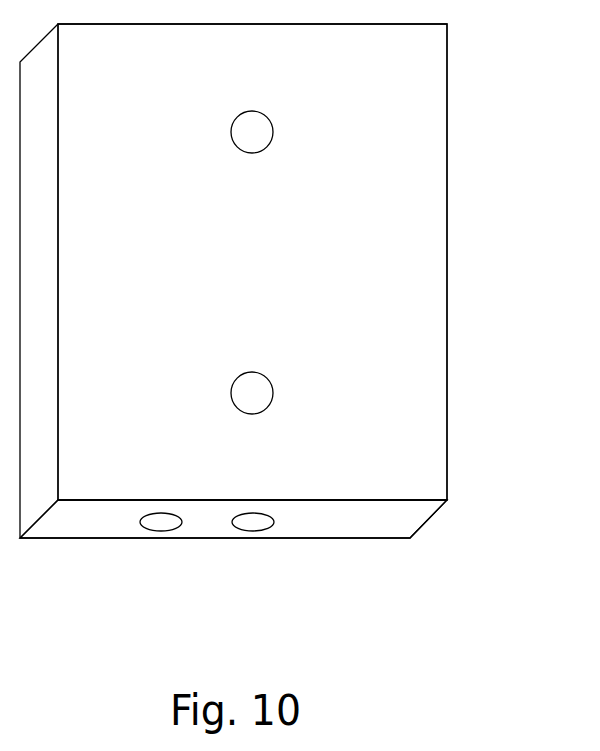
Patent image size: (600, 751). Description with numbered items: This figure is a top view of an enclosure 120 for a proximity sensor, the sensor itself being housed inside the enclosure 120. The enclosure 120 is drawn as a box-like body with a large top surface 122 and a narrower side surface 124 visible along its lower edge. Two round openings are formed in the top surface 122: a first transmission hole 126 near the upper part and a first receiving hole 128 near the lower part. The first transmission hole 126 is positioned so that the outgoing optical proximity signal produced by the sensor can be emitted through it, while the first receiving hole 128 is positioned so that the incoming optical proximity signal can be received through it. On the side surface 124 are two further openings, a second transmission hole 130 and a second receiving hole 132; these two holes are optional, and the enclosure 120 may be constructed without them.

The enclosure 120 is at (462, 84).
The top surface 122 is at (422, 258).
The side surface 124 is at (384, 546).
The first transmission hole 126 is at (226, 133).
The first receiving hole 128 is at (223, 394).
The second transmission hole 130 is at (158, 547).
The second receiving hole 132 is at (250, 547).